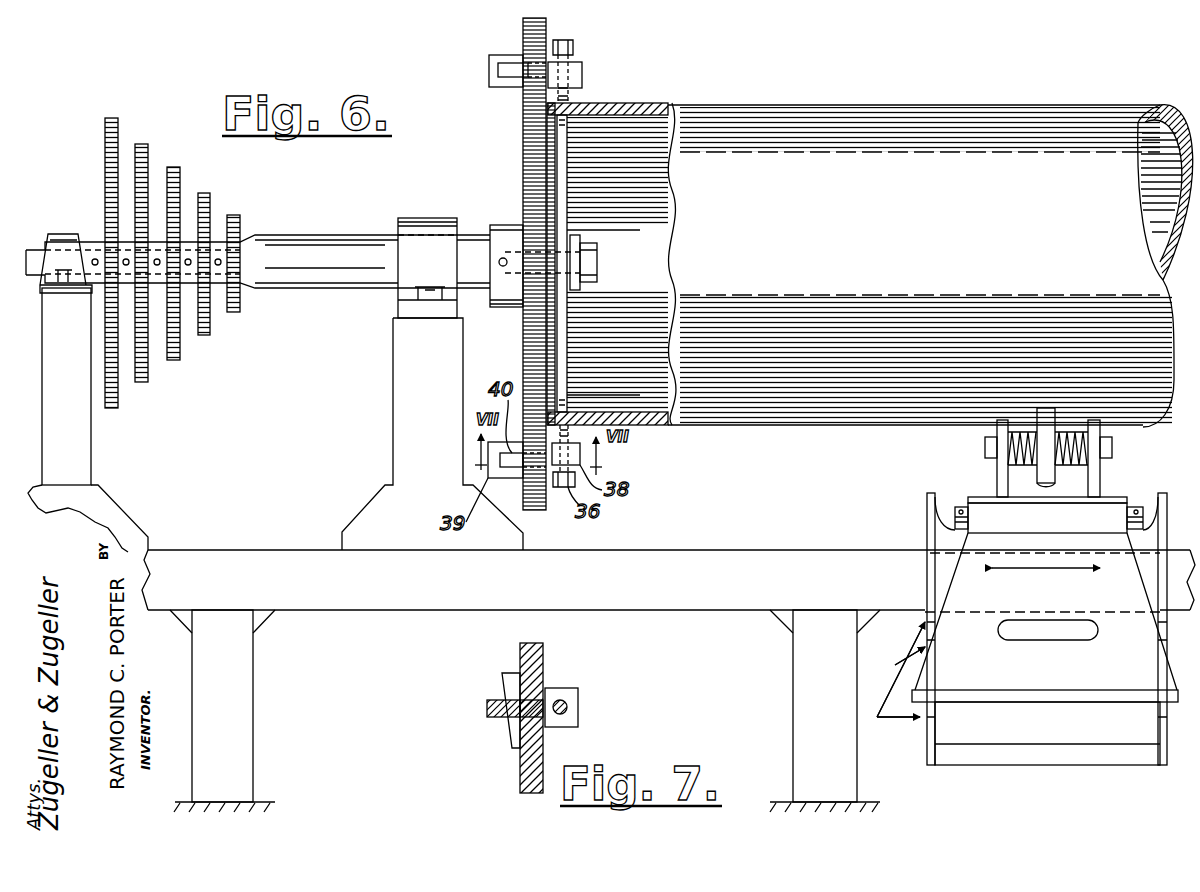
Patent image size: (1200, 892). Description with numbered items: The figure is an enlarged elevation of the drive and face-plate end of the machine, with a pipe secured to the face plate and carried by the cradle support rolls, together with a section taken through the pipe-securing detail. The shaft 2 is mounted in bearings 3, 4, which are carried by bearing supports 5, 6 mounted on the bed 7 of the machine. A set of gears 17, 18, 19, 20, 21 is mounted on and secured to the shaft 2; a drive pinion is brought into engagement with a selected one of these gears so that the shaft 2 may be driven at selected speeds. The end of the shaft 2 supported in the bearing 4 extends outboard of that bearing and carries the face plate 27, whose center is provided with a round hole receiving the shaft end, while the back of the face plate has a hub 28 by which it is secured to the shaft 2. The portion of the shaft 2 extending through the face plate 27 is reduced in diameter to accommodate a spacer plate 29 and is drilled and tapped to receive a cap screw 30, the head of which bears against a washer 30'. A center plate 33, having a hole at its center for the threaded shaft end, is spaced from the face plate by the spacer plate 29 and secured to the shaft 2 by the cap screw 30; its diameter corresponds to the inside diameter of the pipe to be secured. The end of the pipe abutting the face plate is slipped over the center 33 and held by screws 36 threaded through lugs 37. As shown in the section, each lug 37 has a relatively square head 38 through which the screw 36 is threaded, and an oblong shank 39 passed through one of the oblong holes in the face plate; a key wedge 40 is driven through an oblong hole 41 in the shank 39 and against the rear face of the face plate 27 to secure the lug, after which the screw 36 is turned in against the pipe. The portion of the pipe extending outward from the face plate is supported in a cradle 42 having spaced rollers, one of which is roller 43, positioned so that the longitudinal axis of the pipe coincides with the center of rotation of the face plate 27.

In FIG. 6, the shaft 2 is at (335, 240).
In FIG. 6, the bearing 3 is at (60, 234).
In FIG. 6, the bearing 4 is at (420, 218).
In FIG. 6, the bearing support 5 is at (72, 404).
In FIG. 6, the bearing support 6 is at (432, 426).
In FIG. 6, the bed 7 is at (645, 592).
In FIG. 6, the gear 17 is at (234, 215).
In FIG. 6, the gear 18 is at (205, 193).
In FIG. 6, the gear 19 is at (174, 167).
In FIG. 6, the gear 20 is at (142, 144).
In FIG. 6, the gear 21 is at (112, 118).
In FIG. 6, the face plate 27 is at (523, 152).
In FIG. 7, the face plate 27 is at (520, 778).
In FIG. 6, the hub 28 is at (512, 225).
In FIG. 6, the spacer plate 29 is at (523, 333).
In FIG. 6, the cap screw 30 is at (610, 262).
In FIG. 6, the washer 30' is at (595, 272).
In FIG. 6, the center plate 33 is at (567, 333).
In FIG. 6, the screw 36 is at (573, 46).
In FIG. 7, the screw 36 is at (567, 705).
In FIG. 6, the lug 37 is at (506, 40).
In FIG. 7, the lug 37 is at (588, 678).
In FIG. 6, the square head 38 is at (582, 75).
In FIG. 7, the square head 38 is at (578, 722).
In FIG. 6, the oblong shank 39 is at (497, 87).
In FIG. 7, the oblong shank 39 is at (487, 708).
In FIG. 6, the key wedge 40 is at (498, 70).
In FIG. 7, the key wedge 40 is at (520, 700).
In FIG. 7, the oblong hole 41 is at (514, 700).
In FIG. 6, the cradle 42 is at (964, 484).
In FIG. 6, the roller 43 is at (1050, 478).